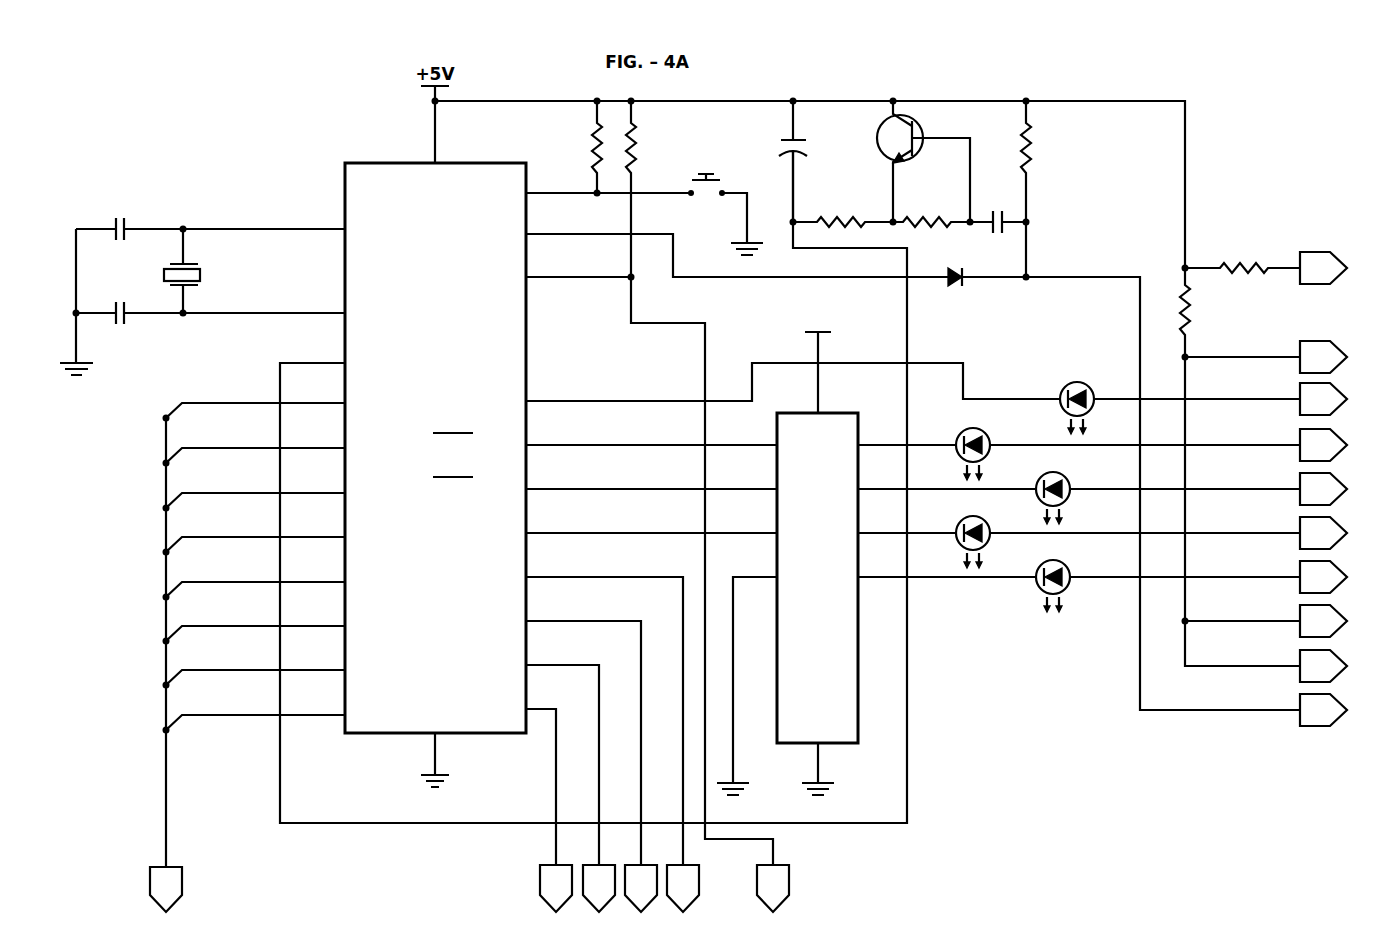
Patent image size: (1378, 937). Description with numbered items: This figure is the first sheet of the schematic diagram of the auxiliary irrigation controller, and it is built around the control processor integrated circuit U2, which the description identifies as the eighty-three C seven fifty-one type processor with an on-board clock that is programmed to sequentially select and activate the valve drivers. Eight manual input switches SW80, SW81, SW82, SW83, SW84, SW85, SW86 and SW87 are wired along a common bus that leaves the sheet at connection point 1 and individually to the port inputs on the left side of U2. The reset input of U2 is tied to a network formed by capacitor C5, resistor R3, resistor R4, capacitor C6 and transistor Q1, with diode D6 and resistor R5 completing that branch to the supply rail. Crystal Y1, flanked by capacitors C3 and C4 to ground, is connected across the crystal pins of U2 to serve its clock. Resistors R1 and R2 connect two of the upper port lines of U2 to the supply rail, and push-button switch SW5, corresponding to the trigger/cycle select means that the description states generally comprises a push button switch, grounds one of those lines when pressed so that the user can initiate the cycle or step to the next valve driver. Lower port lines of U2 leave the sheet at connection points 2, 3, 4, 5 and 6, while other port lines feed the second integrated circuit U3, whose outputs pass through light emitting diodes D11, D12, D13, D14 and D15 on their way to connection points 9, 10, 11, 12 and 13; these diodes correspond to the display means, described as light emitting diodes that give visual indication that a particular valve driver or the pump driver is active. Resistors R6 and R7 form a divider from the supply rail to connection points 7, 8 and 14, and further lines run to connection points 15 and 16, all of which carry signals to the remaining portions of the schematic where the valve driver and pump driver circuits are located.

The connector terminal 1 (switch common) 1 is at (166, 889).
The connector terminal 2 (P10) 2 is at (556, 888).
The connector terminal 3 (P11) 3 is at (599, 888).
The connector terminal 4 (P12) 4 is at (641, 888).
The connector terminal 5 (P13) 5 is at (683, 888).
The connector terminal 6 is at (773, 888).
The connector terminal 7 is at (1323, 268).
The connector terminal 8 is at (1323, 357).
The connector terminal 9 is at (1323, 399).
The auxiliary controller 10 is at (1323, 445).
The connector terminal 11 is at (1323, 489).
The control processor means 12 is at (1323, 533).
The connector terminal 13 is at (1323, 577).
The valve driver means 14 is at (1323, 621).
The connector terminal 15 is at (1323, 666).
The interconnections 16 is at (1323, 710).
The microcontroller 83C751 U2 is at (435, 464).
The decoder 7445 U3 is at (800, 552).
The transistor 2N2222 Q1 is at (914, 136).
The crystal 6.144 MHz Y1 is at (234, 271).
The capacitor 10 pF C3 is at (210, 204).
The capacitor 10 pF C4 is at (210, 339).
The capacitor 10 uF C5 is at (766, 161).
The capacitor 1 uF C6 is at (1004, 193).
The resistor 47K R1 is at (573, 147).
The resistor 47K R2 is at (657, 189).
The resistor 1K R3 is at (843, 201).
The resistor 100K R4 is at (943, 199).
The resistor 47K R5 is at (1050, 189).
The resistor 180 R6 is at (1242, 244).
The resistor 180 R7 is at (1240, 467).
The diode 1N5817 D6 is at (980, 302).
The LED D11 is at (1077, 398).
The LED D12 is at (973, 444).
The LED D13 is at (1053, 488).
The LED D14 is at (973, 532).
The LED D15 is at (1053, 576).
The push-button switch SW5 is at (724, 214).
The switch 80 SW80 is at (221, 725).
The switch 81 SW81 is at (221, 680).
The switch 82 SW82 is at (221, 636).
The switch 83 SW83 is at (221, 592).
The switch 84 SW84 is at (221, 547).
The switch 85 SW85 is at (221, 503).
The switch 86 SW86 is at (221, 458).
The switch 87 SW87 is at (221, 413).